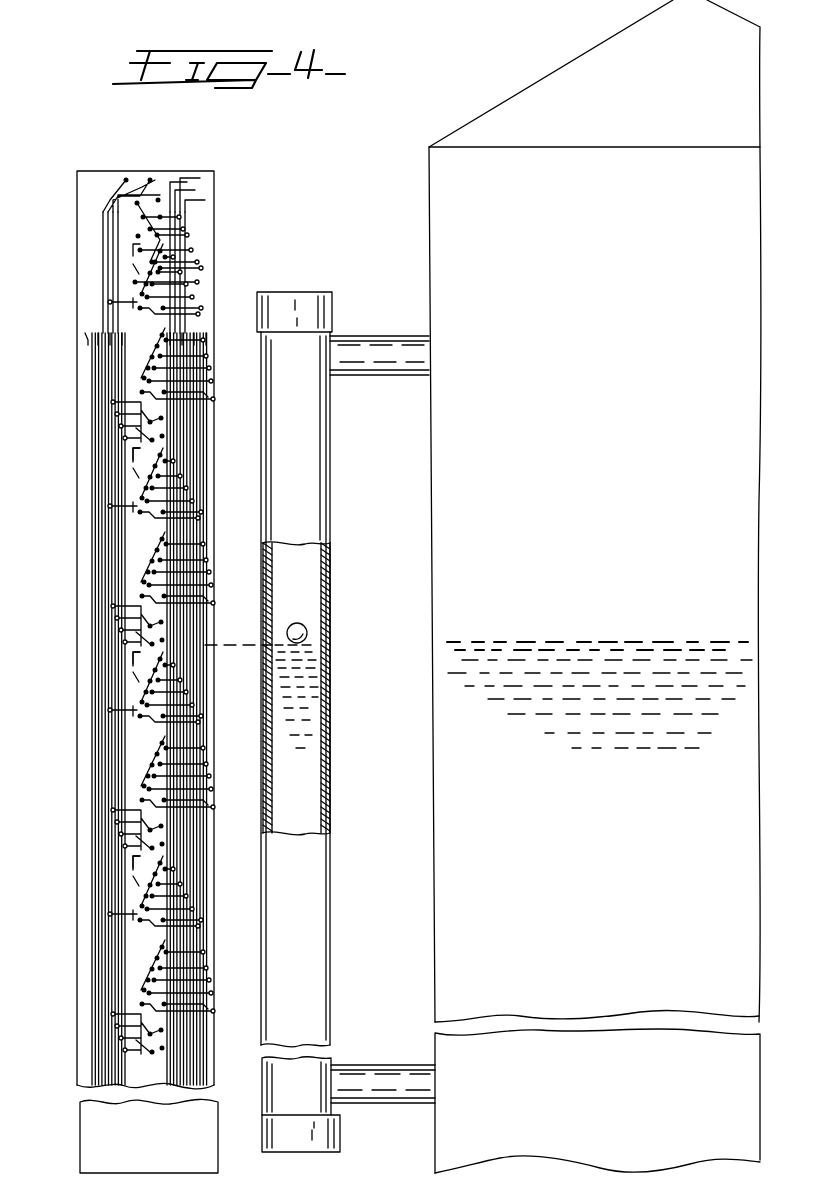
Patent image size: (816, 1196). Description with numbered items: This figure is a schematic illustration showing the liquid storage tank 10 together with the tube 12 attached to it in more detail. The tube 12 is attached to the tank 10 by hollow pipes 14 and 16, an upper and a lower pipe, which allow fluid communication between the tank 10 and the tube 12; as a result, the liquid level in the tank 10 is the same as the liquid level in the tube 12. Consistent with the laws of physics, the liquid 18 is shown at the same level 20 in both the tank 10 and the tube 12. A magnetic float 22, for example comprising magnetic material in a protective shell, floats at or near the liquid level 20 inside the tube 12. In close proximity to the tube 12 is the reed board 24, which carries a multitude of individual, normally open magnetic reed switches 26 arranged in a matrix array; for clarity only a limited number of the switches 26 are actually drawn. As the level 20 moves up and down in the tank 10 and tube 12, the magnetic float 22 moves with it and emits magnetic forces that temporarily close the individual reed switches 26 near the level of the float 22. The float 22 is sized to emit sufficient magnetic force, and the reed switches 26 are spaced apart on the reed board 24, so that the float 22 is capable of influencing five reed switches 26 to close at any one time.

The liquid storage tank 10 is at (528, 88).
The tube 12 is at (330, 458).
The hollow pipe 14 is at (378, 1104).
The hollow pipe 16 is at (365, 376).
The liquid 18 is at (622, 826).
The liquid level 20 is at (318, 645).
The magnetic float 22 is at (300, 623).
The reed board 24 is at (77, 543).
The magnetic reed switches 26 is at (135, 452).